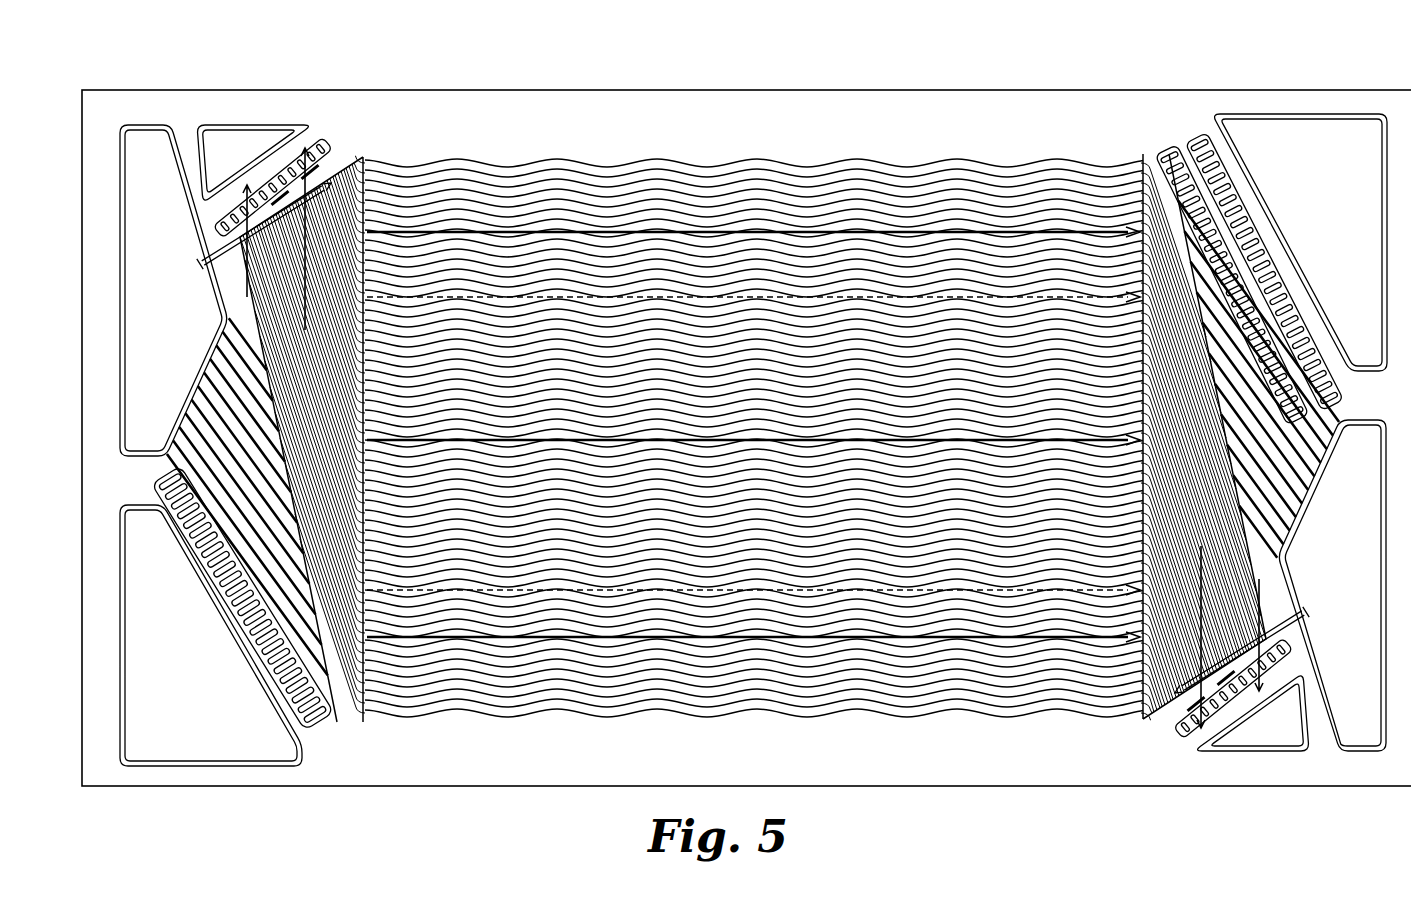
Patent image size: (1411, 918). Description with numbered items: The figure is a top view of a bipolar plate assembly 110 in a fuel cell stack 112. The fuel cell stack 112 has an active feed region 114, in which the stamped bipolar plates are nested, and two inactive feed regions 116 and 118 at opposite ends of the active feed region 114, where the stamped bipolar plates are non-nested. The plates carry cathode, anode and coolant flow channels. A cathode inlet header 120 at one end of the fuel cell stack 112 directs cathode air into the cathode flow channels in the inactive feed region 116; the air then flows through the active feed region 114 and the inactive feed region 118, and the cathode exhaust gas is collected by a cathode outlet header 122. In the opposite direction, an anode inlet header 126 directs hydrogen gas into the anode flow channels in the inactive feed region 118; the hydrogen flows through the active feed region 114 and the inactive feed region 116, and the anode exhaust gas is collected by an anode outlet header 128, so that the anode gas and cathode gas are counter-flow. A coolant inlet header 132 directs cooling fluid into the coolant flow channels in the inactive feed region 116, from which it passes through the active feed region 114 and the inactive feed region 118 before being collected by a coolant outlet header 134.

The bipolar plate assembly 110 is at (445, 108).
The fuel cell stack 112 is at (746, 395).
The active feed region 114 is at (779, 148).
The inactive feed region 116 is at (318, 120).
The inactive feed region 118 is at (1172, 742).
The cathode inlet header 120 is at (119, 752).
The cathode outlet header 122 is at (1292, 113).
The anode inlet header 126 is at (1248, 748).
The anode outlet header 128 is at (242, 120).
The coolant inlet header 132 is at (108, 160).
The coolant outlet header 134 is at (1360, 705).